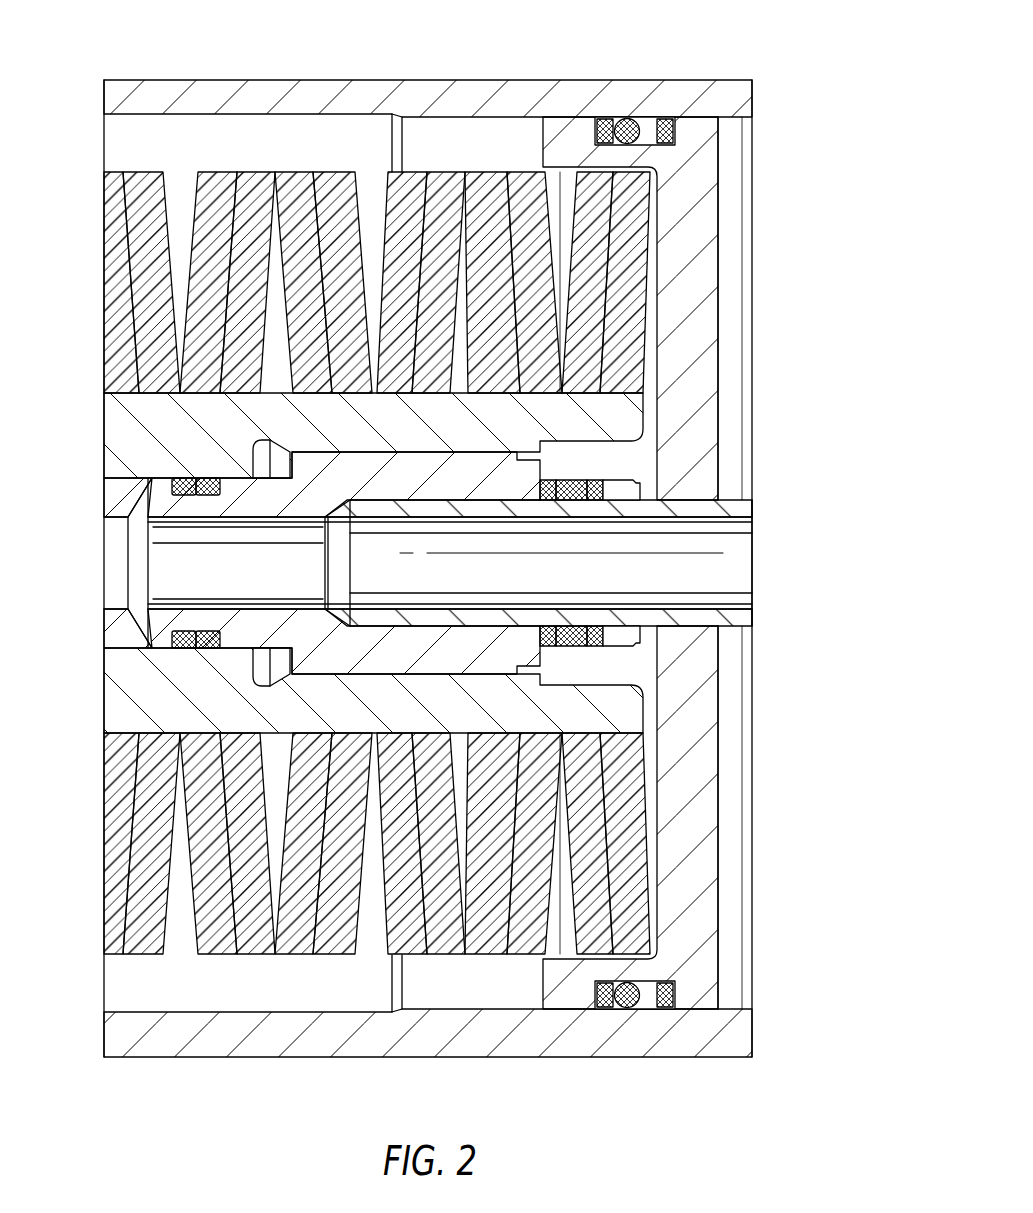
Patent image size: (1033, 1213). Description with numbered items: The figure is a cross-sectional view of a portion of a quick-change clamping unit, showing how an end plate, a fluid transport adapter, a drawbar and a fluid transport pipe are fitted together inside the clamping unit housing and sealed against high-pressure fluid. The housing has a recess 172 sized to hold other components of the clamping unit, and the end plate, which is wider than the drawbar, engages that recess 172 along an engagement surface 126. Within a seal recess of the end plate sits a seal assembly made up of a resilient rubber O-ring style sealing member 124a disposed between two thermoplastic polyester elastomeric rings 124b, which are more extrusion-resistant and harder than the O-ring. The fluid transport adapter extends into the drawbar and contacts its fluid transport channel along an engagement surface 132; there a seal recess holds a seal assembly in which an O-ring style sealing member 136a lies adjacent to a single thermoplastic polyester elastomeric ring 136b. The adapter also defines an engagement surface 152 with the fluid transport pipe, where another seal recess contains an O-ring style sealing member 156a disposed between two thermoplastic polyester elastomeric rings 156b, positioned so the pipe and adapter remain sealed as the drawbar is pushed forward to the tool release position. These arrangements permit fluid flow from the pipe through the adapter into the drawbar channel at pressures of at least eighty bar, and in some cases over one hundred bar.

The recess 172 is at (380, 137).
The engagement surface 126 is at (563, 117).
The O-ring style sealing member 124a is at (628, 118).
The thermoplastic polyester elastomeric ring 124b is at (600, 118).
The engagement surface 132 is at (250, 672).
The engagement surface 152 is at (515, 648).
The O-ring style sealing member 136a is at (162, 480).
The thermoplastic polyester elastomeric ring 136b is at (210, 478).
The O-ring style sealing member 156a is at (575, 480).
The thermoplastic polyester elastomeric ring 156b is at (548, 480).